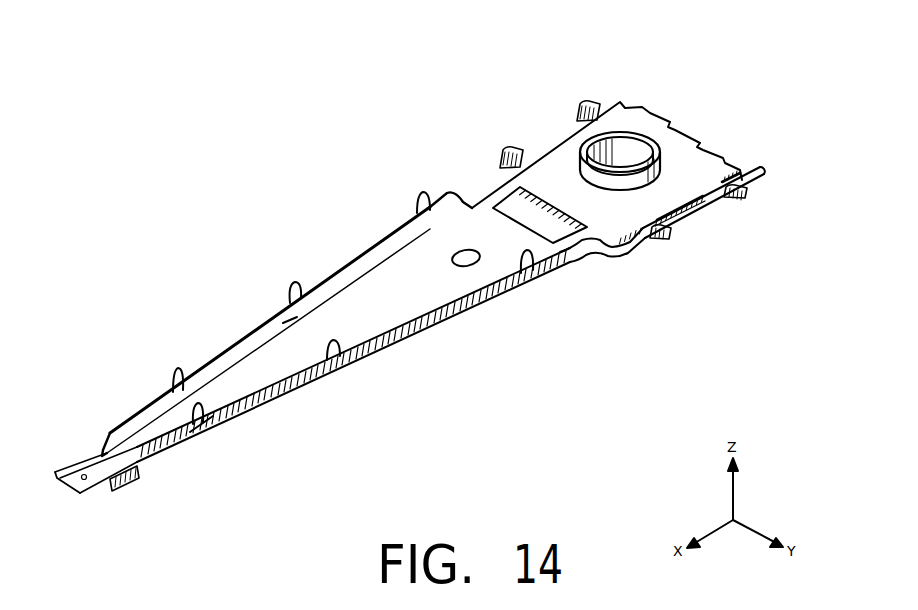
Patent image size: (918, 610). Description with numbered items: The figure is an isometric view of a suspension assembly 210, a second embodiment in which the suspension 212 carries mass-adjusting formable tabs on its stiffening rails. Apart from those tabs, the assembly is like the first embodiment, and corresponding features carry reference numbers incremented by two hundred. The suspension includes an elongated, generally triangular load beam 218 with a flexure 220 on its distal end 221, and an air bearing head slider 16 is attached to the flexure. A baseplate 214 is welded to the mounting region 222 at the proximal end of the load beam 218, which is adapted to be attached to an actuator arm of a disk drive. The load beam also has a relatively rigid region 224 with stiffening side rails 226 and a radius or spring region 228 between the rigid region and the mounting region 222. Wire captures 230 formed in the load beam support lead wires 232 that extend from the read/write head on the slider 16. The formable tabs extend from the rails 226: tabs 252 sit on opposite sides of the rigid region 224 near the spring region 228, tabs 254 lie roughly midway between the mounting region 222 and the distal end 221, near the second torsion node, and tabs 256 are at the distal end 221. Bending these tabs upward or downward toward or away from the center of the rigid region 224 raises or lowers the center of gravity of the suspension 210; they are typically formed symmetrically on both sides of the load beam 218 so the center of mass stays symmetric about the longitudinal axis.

The air bearing head slider 16 is at (130, 485).
The suspension 210 is at (357, 220).
The suspension 212 is at (477, 313).
The baseplate 214 is at (703, 200).
The load beam 218 is at (357, 293).
The flexure 220 is at (80, 493).
The distal end 221 is at (140, 410).
The mounting region 222 is at (567, 140).
The rigid region 224 is at (383, 320).
The stiffening rails 226 is at (350, 257).
The spring region 228 is at (500, 195).
The wire captures 230 is at (662, 240).
The lead wires 232 is at (761, 173).
The formable tabs 252 is at (417, 193).
The formable tabs 254 is at (295, 283).
The formable tabs 256 is at (180, 368).